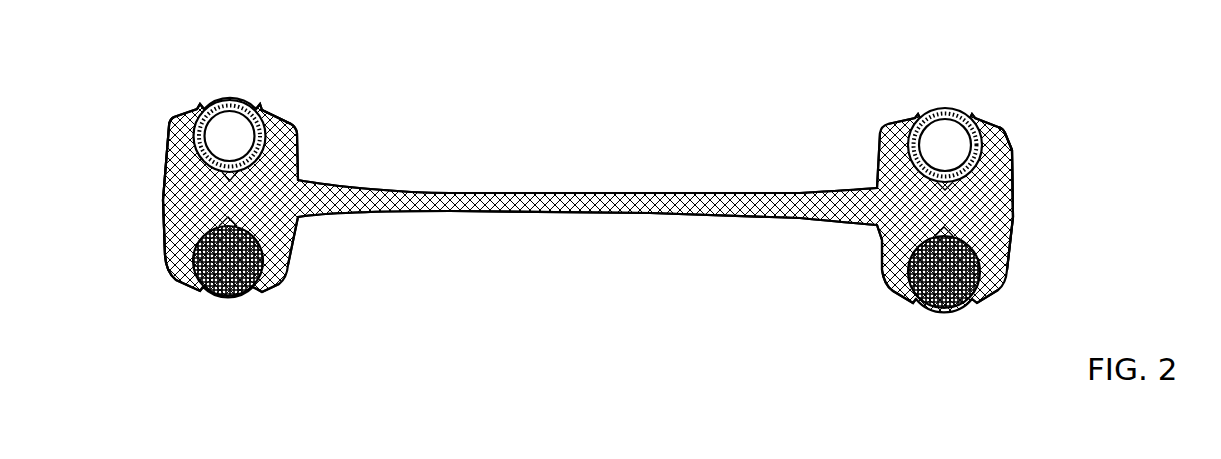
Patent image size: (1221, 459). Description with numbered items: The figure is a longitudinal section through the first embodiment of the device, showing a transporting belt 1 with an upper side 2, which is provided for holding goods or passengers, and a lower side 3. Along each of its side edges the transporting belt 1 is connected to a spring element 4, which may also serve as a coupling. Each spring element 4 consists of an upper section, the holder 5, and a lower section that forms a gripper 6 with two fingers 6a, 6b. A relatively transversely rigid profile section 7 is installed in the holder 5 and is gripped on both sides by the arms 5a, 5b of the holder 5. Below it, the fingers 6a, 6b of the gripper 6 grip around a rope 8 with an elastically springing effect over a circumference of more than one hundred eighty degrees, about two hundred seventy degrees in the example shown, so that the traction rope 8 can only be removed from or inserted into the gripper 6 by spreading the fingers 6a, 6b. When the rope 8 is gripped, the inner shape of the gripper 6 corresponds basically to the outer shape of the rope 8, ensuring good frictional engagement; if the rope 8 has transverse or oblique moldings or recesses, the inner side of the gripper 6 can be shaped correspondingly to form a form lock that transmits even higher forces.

The transporting belt 1 is at (447, 192).
The upper side 2 is at (538, 192).
The lower side 3 is at (557, 213).
The spring element 4 is at (162, 120).
The holder 5 is at (165, 157).
The arm 5a is at (187, 112).
The arm 5b is at (283, 120).
The gripper 6 is at (167, 230).
The finger 6a is at (172, 268).
The finger 6b is at (283, 283).
The profile section 7 is at (228, 100).
The rope 8 is at (227, 297).